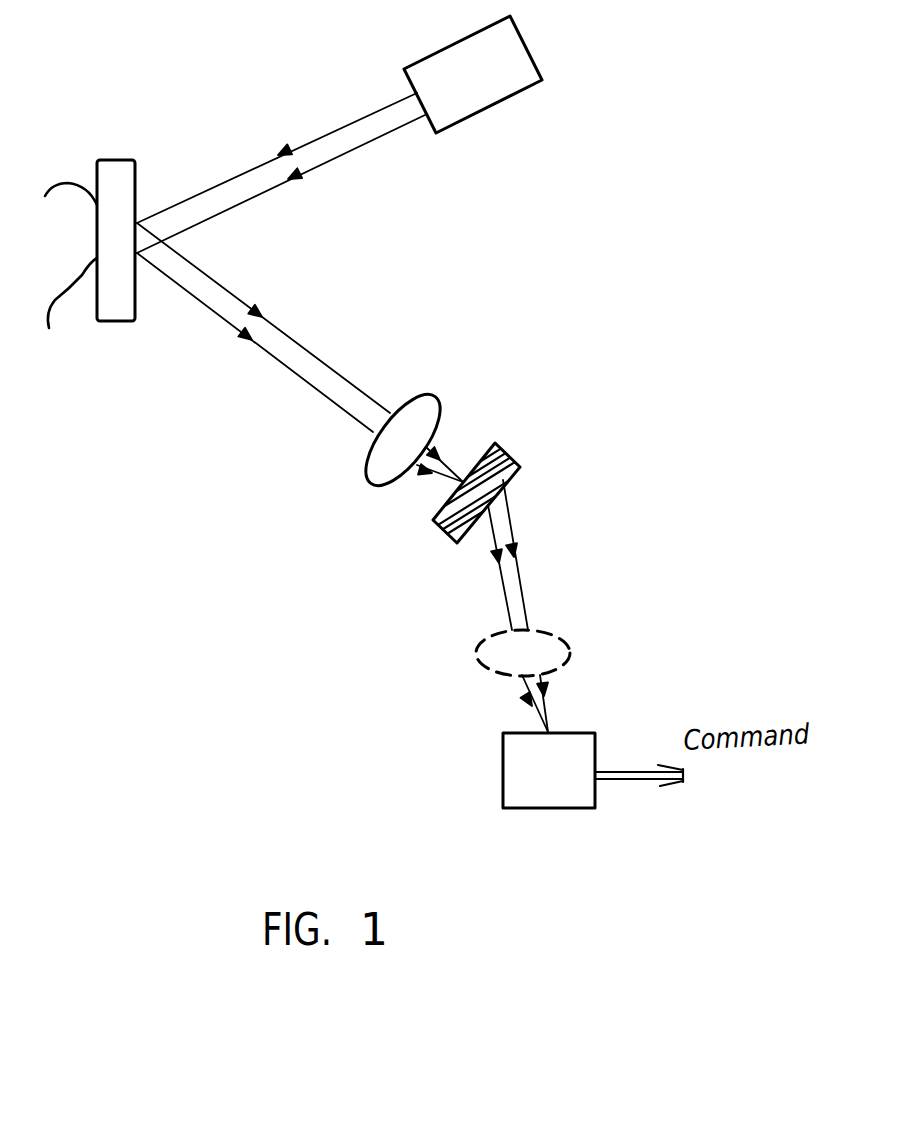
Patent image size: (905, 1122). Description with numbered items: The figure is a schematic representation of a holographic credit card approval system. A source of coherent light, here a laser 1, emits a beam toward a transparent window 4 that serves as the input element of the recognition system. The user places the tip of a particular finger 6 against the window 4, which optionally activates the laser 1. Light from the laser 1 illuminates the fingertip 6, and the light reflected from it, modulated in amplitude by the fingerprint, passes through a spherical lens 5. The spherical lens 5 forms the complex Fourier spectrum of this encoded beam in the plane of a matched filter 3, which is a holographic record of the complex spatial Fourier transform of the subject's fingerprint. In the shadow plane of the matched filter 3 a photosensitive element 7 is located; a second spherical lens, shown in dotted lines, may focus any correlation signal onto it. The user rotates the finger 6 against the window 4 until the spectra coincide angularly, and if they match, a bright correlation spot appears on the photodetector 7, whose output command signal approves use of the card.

The laser 1 is at (519, 51).
The matched filter 3 is at (471, 505).
The transparent window 4 is at (112, 308).
The spherical lens 5 is at (403, 454).
The finger 6 is at (71, 255).
The photosensitive element 7 is at (518, 783).